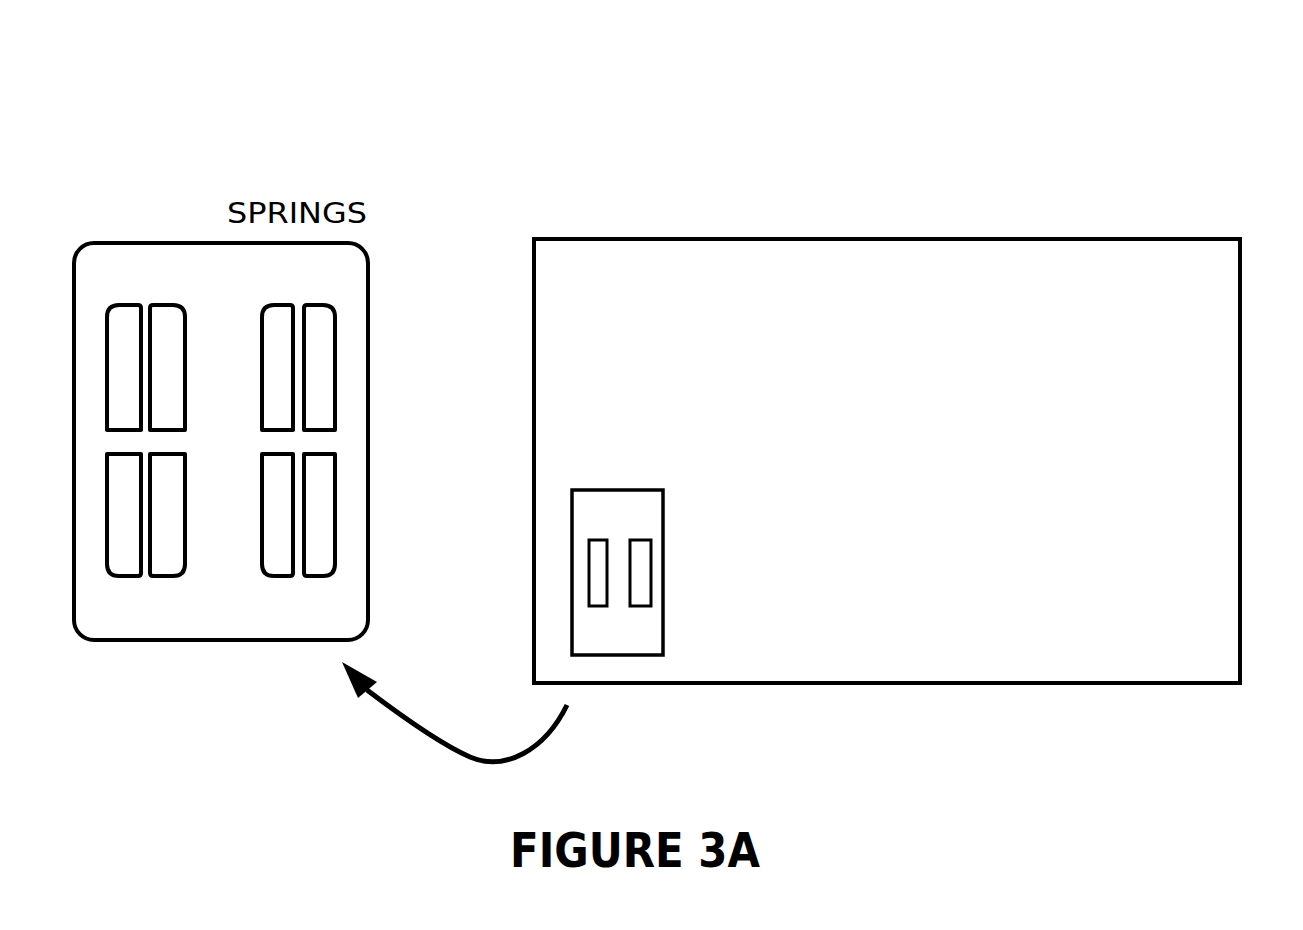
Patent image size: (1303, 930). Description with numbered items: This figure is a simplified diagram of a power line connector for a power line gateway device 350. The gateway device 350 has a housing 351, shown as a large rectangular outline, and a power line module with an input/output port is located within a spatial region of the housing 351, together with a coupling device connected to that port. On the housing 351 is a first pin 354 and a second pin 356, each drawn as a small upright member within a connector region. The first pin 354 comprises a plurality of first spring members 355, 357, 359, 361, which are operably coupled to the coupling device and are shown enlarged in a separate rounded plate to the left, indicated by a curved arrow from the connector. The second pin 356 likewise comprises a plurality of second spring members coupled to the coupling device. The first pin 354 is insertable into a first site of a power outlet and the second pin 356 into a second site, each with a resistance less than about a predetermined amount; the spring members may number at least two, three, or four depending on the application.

The power line gateway device 350 is at (887, 452).
The housing 351 is at (1065, 660).
The first pin 354 is at (698, 508).
The second pin 356 is at (597, 550).
The first spring member 355 is at (323, 338).
The first spring member 357 is at (268, 336).
The first spring member 359 is at (320, 557).
The first spring member 361 is at (275, 558).